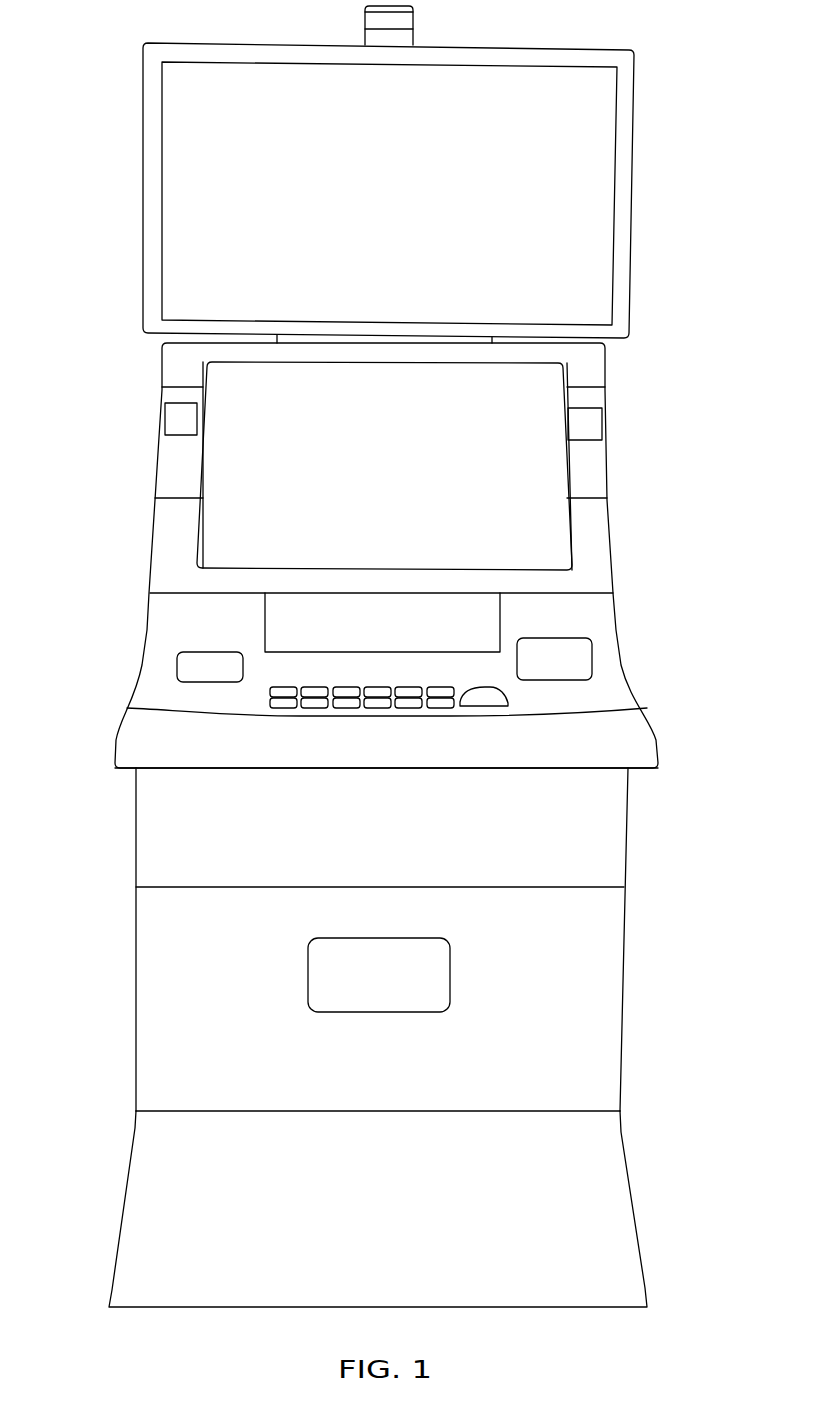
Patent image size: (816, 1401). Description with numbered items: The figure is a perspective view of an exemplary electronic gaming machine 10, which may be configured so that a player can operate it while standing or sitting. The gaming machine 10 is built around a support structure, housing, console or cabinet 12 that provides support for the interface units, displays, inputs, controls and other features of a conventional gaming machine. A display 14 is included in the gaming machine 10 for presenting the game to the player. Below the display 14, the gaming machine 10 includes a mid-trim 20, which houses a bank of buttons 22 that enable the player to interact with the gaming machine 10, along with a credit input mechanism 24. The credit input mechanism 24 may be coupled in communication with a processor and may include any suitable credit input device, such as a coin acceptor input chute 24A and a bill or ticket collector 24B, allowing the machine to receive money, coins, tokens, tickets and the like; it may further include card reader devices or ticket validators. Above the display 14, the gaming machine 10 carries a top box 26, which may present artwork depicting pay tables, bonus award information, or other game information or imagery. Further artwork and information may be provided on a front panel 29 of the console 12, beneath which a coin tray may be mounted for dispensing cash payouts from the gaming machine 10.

The gaming machine 10 is at (693, 128).
The cabinet 12 is at (613, 533).
The display 14 is at (256, 458).
The mid-trim 20 is at (118, 725).
The bank of buttons 22 is at (328, 712).
The credit input mechanism 24 is at (592, 637).
The coin acceptor input chute 24A is at (510, 699).
The bill or ticket collector 24B is at (595, 655).
The top box 26 is at (156, 163).
The front panel 29 is at (555, 979).